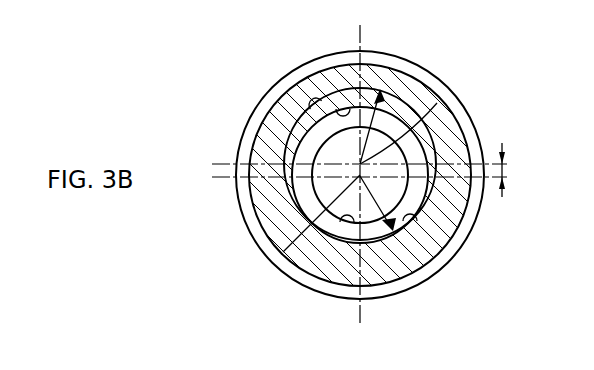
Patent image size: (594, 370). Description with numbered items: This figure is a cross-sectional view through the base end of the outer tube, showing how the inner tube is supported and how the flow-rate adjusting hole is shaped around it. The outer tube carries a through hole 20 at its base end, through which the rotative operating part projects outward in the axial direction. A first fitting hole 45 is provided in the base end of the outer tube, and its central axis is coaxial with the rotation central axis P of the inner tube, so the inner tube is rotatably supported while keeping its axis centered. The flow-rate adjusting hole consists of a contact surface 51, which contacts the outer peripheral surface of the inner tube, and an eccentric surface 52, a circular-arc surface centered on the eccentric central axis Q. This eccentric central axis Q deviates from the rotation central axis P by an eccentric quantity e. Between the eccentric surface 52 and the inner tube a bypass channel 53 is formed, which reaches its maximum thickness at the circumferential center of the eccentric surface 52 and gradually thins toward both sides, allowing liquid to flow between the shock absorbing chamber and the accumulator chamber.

The through hole 20 is at (317, 268).
The first fitting hole 45 is at (340, 112).
The contact surface 51 is at (416, 218).
The eccentric surface 52 is at (312, 103).
The bypass channel 53 is at (400, 107).
The rotation central axis P is at (282, 255).
The eccentric central axis Q is at (437, 103).
The eccentric quantity e is at (512, 170).